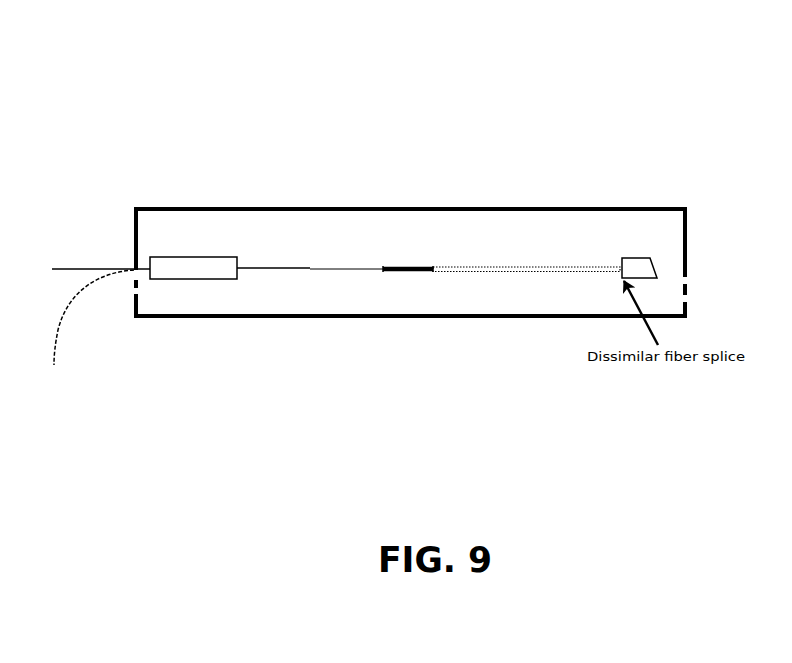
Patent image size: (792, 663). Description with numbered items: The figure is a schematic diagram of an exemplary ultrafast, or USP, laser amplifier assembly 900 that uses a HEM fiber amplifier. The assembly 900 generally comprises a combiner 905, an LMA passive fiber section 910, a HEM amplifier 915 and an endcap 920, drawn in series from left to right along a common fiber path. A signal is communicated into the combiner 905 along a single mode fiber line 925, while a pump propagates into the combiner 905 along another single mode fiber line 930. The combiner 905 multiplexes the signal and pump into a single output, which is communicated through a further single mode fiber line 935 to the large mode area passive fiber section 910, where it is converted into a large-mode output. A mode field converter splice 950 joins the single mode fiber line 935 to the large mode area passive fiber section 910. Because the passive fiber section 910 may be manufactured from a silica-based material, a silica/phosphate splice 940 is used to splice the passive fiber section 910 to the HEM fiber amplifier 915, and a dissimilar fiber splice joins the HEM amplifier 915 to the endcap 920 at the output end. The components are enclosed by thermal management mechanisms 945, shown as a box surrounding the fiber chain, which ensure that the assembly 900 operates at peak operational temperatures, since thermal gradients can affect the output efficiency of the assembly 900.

The assembly 900 is at (707, 108).
The combiner 905 is at (187, 256).
The LMA passive fiber section 910 is at (412, 256).
The HEM amplifier 915 is at (523, 256).
The endcap 920 is at (634, 256).
The single mode fiber line 925 is at (66, 269).
The single mode fiber line 930 is at (74, 305).
The single mode fiber line 935 is at (310, 224).
The silica/phosphate splice 940 is at (434, 277).
The thermal management mechanisms 945 is at (203, 317).
The mode field converter splice 950 is at (378, 277).